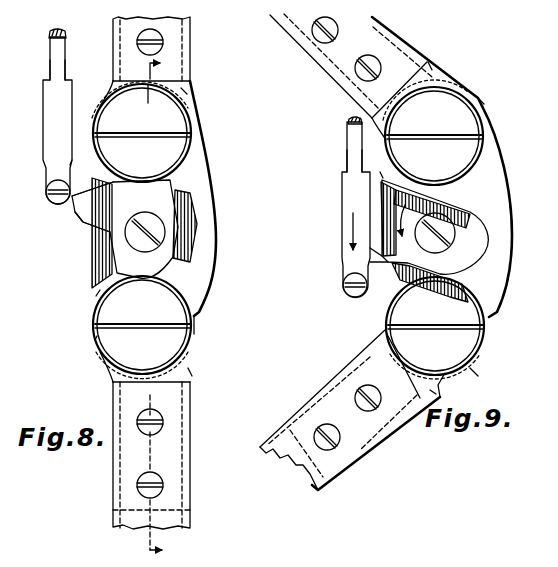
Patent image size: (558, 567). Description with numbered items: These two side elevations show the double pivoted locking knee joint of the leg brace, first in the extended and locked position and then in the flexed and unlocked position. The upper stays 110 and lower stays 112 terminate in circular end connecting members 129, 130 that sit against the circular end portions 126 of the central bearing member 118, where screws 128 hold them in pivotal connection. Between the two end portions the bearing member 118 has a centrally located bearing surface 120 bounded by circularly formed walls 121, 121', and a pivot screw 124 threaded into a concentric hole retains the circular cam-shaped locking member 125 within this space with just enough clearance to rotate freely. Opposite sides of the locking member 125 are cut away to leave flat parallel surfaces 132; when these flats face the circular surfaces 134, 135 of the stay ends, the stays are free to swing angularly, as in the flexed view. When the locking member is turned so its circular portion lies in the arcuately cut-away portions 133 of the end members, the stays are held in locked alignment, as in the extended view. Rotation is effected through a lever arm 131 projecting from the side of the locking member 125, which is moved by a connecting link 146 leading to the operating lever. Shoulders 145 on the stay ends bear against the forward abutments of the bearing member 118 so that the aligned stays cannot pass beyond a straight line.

In FIG. 8, the upper stays 110 is at (193, 41).
In FIG. 9, the upper stays 110 is at (387, 31).
In FIG. 8, the lower stays 112 is at (186, 478).
In FIG. 9, the lower stays 112 is at (350, 455).
In FIG. 8, the central bearing member 118 is at (212, 295).
In FIG. 9, the central bearing member 118 is at (500, 160).
In FIG. 8, the bearing surface 120 is at (105, 265).
In FIG. 9, the bearing surface 120 is at (393, 198).
In FIG. 8, the circular wall 121 is at (135, 178).
In FIG. 8, the circular wall 121' is at (71, 306).
In FIG. 9, the circular wall 121' is at (341, 236).
In FIG. 8, the pivot screw 124 is at (132, 242).
In FIG. 9, the pivot screw 124 is at (385, 200).
In FIG. 8, the cam-shaped locking member 125 is at (170, 262).
In FIG. 9, the cam-shaped locking member 125 is at (472, 223).
In FIG. 8, the end portions 126 is at (189, 97).
In FIG. 9, the end portions 126 is at (436, 82).
In FIG. 8, the screws 128 is at (178, 146).
In FIG. 9, the screws 128 is at (463, 113).
In FIG. 8, the end connecting member 129 is at (182, 89).
In FIG. 9, the end connecting member 129 is at (431, 70).
In FIG. 8, the end connecting member 130 is at (190, 369).
In FIG. 9, the end connecting member 130 is at (430, 390).
In FIG. 8, the lever arm 131 is at (72, 207).
In FIG. 9, the lever arm 131 is at (377, 270).
In FIG. 8, the flat parallel surfaces 132 is at (110, 232).
In FIG. 9, the flat parallel surfaces 132 is at (433, 190).
In FIG. 8, the arcuately cut-away portions 133 is at (147, 180).
In FIG. 9, the arcuately cut-away portions 133 is at (465, 163).
In FIG. 8, the circular surface 134 is at (85, 145).
In FIG. 9, the circular surface 134 is at (382, 153).
In FIG. 8, the circular surface 135 is at (202, 312).
In FIG. 9, the circular surface 135 is at (489, 320).
In FIG. 8, the shoulders 145 is at (198, 330).
In FIG. 9, the shoulders 145 is at (478, 97).
In FIG. 8, the connecting link 146 is at (60, 35).
In FIG. 9, the connecting link 146 is at (356, 121).